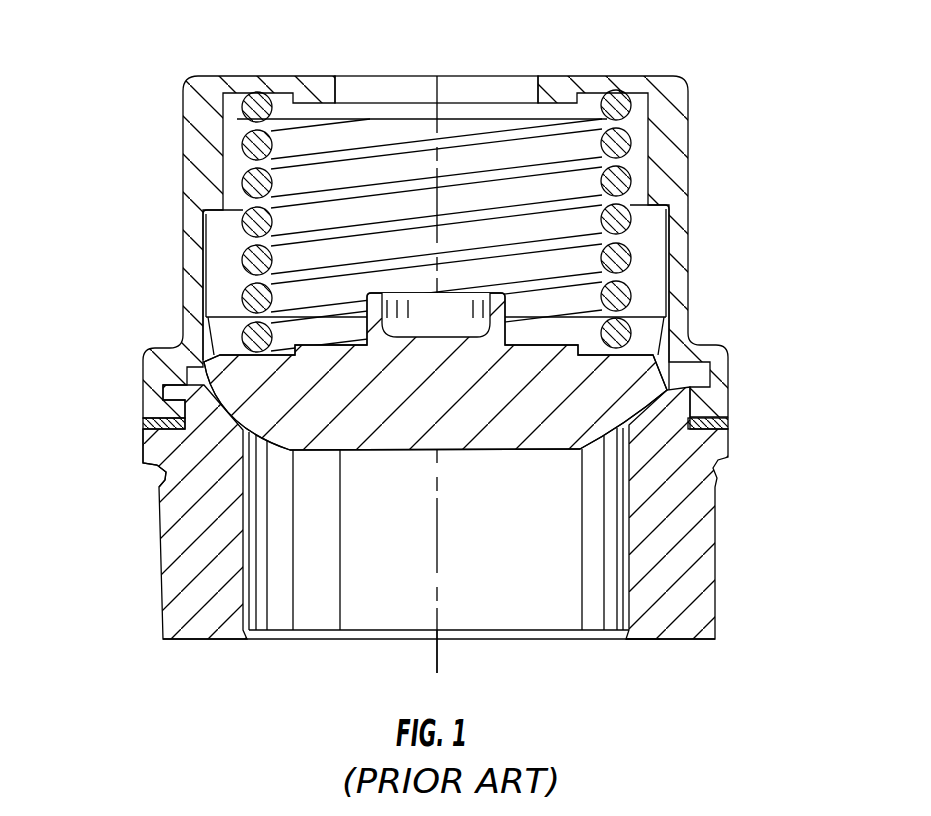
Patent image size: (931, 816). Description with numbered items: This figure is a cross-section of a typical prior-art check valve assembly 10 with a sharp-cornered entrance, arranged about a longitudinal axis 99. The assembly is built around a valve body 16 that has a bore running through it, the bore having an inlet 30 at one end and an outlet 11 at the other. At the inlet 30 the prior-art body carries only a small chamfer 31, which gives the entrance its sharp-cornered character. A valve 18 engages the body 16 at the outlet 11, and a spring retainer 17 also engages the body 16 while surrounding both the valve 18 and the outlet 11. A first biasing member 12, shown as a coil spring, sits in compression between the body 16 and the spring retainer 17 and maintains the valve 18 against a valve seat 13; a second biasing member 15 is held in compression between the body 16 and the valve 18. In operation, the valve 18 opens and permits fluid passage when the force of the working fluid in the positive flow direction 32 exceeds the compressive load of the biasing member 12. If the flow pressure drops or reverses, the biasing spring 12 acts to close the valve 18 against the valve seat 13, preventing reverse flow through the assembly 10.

The check valve assembly 10 is at (136, 272).
The outlet 11 is at (688, 78).
The first biasing member 12 is at (670, 220).
The valve seat 13 is at (160, 468).
The second biasing member 15 is at (730, 424).
The valve body 16 is at (693, 585).
The spring retainer 17 is at (556, 73).
The valve 18 is at (588, 384).
The inlet 30 is at (555, 640).
The chamfer 31 is at (625, 640).
The positive flow direction 32 is at (440, 638).
The longitudinal axis 99 is at (437, 660).